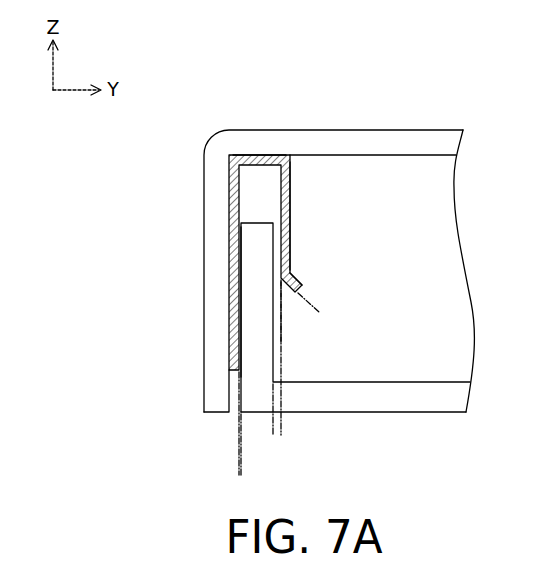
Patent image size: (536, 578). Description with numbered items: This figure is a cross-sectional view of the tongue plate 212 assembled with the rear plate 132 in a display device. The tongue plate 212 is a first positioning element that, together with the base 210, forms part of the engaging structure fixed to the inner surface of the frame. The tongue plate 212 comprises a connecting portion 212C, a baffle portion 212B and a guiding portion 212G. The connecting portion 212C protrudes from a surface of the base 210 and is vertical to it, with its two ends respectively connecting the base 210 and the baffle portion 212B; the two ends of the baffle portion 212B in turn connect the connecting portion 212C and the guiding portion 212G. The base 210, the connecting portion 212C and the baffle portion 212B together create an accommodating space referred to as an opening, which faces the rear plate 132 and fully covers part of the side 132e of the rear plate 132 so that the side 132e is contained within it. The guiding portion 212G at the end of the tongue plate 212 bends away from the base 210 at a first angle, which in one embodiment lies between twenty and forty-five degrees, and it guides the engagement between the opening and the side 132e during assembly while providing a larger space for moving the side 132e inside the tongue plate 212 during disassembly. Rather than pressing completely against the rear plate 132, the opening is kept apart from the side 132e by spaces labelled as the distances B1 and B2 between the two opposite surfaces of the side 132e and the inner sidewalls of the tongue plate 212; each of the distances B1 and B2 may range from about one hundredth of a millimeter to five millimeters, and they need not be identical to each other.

The base 210 is at (228, 210).
The tongue plate 212 is at (250, 78).
The connecting portion 212C is at (271, 162).
The baffle portion 212B is at (290, 187).
The guiding portion 212G is at (299, 276).
The rear plate 132 is at (381, 395).
The side of the rear plate 132e is at (250, 299).
The distance B1 is at (310, 428).
The distance B2 is at (268, 468).